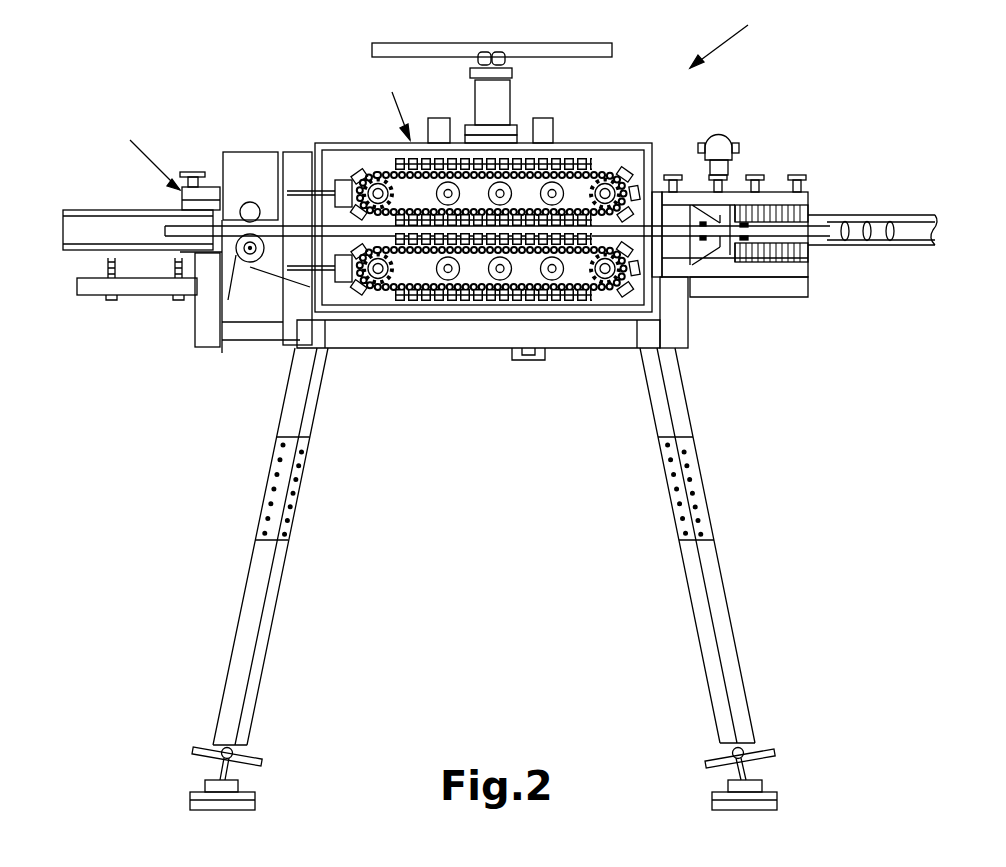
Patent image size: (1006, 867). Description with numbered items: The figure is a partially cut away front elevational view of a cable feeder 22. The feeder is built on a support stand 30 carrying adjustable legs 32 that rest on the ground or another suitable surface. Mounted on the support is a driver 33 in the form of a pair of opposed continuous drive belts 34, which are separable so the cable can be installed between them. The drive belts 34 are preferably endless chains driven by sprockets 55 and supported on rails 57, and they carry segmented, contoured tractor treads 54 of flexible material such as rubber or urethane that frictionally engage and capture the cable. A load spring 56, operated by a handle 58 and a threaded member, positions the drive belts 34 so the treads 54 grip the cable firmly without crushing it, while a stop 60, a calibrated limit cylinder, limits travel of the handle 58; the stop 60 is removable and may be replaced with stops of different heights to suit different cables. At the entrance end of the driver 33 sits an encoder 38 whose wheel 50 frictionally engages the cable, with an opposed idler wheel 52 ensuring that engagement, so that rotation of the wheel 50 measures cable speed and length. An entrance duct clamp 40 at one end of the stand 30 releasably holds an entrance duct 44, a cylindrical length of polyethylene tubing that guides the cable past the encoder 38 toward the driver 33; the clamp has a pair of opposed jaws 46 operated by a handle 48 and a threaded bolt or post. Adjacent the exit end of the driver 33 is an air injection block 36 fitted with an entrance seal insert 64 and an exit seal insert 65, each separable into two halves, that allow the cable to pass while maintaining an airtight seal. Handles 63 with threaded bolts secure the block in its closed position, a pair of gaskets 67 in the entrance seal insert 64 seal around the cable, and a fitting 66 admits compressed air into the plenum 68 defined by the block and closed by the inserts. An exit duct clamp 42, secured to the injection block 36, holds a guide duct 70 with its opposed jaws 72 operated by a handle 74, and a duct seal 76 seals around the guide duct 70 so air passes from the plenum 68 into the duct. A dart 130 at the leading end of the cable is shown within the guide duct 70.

The cable feeder 22 is at (741, 37).
The support stand 30 is at (583, 347).
The adjustable legs 32 is at (245, 575).
The driver 33 is at (392, 100).
The drive belts 34 is at (425, 170).
The air injection block 36 is at (732, 190).
The encoder 38 is at (240, 150).
The entrance duct clamp 40 is at (159, 161).
The exit duct clamp 42 is at (812, 200).
The entrance duct 44 is at (83, 212).
The opposed jaws 46 is at (180, 205).
The handle 48 is at (192, 172).
The wheel 50 is at (255, 265).
The idler wheel 52 is at (235, 290).
The tractor treads 54 is at (345, 178).
The sprockets 55 is at (358, 182).
The load spring 56 is at (505, 78).
The rails 57 is at (505, 272).
The handle 58 is at (470, 45).
The stop 60 is at (510, 107).
The handles 63 is at (668, 160).
The entrance seal insert 64 is at (690, 215).
The exit seal insert 65 is at (768, 215).
The fitting 66 is at (722, 145).
The gaskets 67 is at (703, 240).
The plenum 68 is at (728, 252).
The guide duct 70 is at (912, 248).
The opposed jaws 72 is at (812, 212).
The handle 74 is at (810, 190).
The duct seal 76 is at (745, 252).
The dart 130 is at (890, 225).